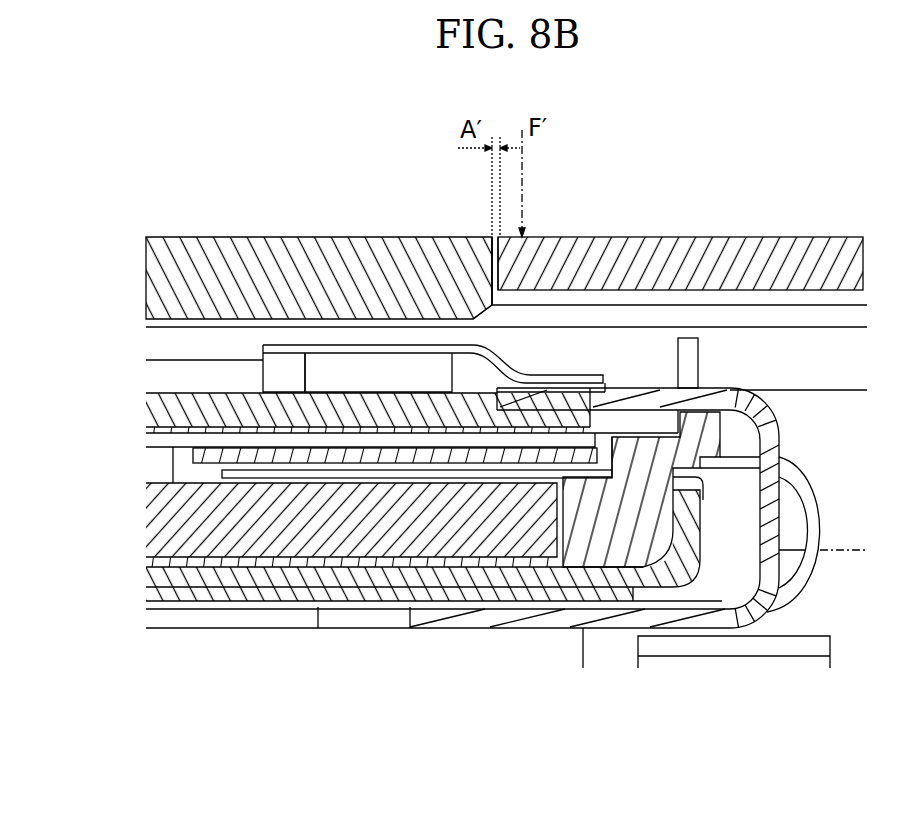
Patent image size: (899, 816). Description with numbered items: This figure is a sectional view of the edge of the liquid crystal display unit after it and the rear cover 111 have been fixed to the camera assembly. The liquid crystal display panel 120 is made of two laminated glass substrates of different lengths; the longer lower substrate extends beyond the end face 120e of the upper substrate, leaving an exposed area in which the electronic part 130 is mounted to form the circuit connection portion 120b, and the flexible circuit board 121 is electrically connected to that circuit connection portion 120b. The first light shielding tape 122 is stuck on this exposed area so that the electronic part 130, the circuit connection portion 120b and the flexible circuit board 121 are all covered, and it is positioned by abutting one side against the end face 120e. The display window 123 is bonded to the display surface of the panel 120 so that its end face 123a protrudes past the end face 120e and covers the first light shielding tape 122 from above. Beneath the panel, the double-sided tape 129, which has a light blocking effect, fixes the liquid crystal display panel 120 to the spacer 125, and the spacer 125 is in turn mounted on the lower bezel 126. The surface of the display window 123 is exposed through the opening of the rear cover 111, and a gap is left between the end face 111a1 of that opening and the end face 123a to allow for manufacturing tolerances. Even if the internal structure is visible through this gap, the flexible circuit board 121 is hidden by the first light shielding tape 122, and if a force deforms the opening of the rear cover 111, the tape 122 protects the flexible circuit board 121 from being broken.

The rear cover 111 is at (750, 262).
The end face of the opening 111a1 is at (493, 237).
The liquid crystal display panel 120 is at (162, 420).
The circuit connection portion 120b is at (497, 400).
The end face of the upper glass substrate 120e is at (263, 353).
The flexible circuit board 121 is at (737, 392).
The first light shielding tape 122 is at (323, 377).
The display window 123 is at (352, 256).
The end face of the display window 123a is at (490, 253).
The spacer 125 is at (662, 458).
The lower bezel 126 is at (693, 527).
The double-sided tape 129 is at (160, 437).
The electronic part 130 is at (320, 352).